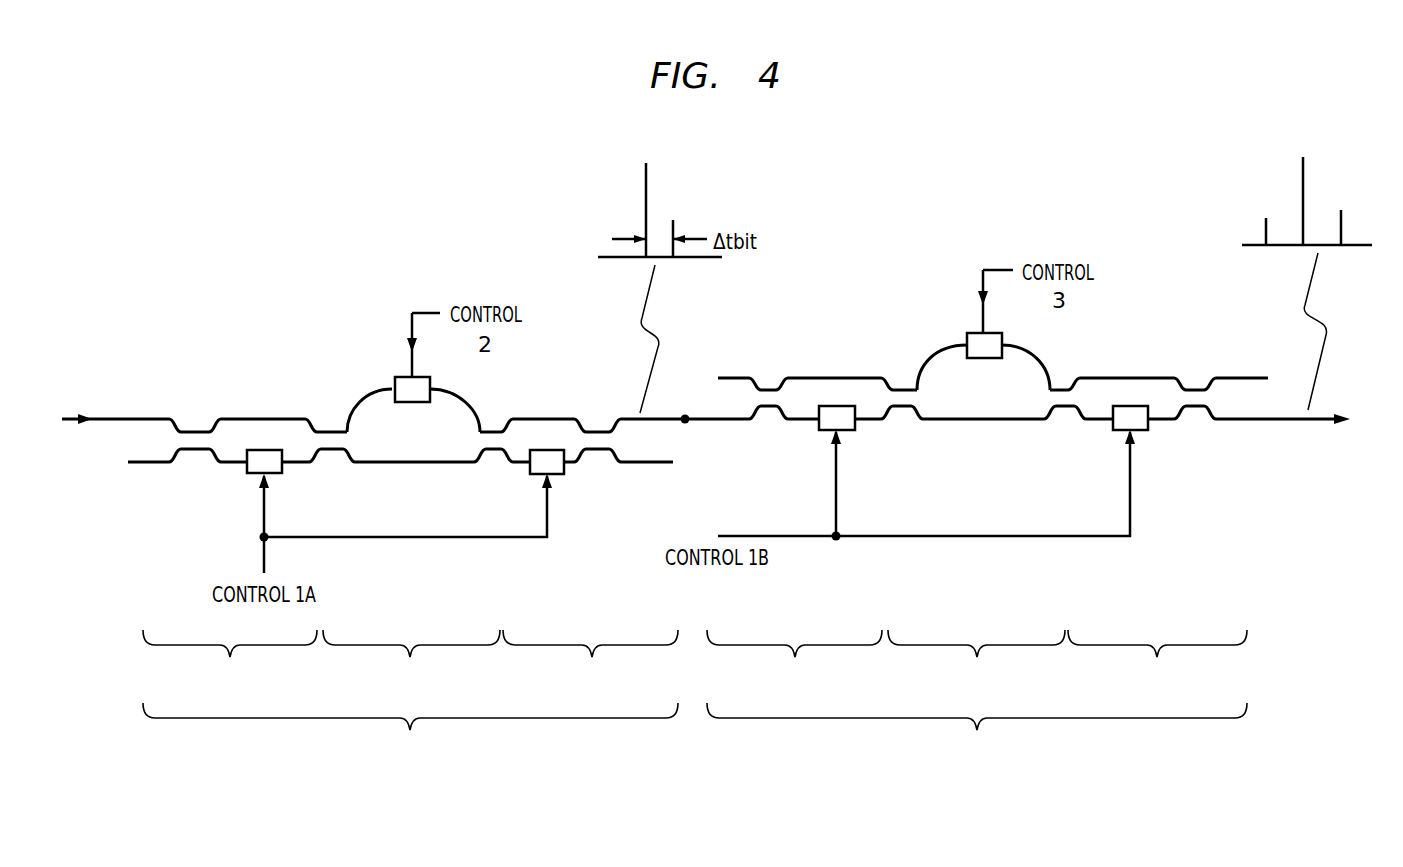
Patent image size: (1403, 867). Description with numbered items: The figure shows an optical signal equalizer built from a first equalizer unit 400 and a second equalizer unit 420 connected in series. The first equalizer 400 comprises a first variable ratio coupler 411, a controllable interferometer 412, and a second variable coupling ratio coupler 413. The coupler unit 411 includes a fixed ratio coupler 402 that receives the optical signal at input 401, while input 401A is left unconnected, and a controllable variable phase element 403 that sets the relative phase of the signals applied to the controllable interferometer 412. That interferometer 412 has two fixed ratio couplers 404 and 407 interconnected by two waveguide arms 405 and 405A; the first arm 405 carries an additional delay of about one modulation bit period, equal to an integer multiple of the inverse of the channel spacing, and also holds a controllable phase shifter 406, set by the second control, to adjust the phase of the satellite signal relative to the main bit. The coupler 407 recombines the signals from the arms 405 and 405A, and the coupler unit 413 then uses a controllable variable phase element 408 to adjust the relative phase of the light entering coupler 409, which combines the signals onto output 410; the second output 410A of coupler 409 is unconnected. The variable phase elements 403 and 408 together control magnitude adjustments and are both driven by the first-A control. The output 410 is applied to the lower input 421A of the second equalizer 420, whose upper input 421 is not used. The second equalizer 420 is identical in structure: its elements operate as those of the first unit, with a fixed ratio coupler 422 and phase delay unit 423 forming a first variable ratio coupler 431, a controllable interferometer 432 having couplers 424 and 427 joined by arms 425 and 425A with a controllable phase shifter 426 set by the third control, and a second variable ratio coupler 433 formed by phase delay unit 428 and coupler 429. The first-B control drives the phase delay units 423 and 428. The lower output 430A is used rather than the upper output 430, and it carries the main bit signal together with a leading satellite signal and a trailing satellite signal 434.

The first equalizer unit 400 is at (410, 732).
The input 401 is at (160, 418).
The input 401A is at (135, 465).
The fixed ratio coupler 402 is at (194, 431).
The controllable variable phase element 403 is at (253, 475).
The fixed ratio coupler 404 is at (329, 431).
The first waveguide arm 405 is at (353, 407).
The second waveguide arm 405A is at (373, 464).
The controllable phase shifter 406 is at (422, 373).
The fixed ratio coupler 407 is at (492, 430).
The controllable variable phase element 408 is at (538, 476).
The coupler 409 is at (598, 431).
The output 410 is at (670, 416).
The second output 410A is at (647, 464).
The first variable ratio coupler 411 is at (230, 660).
The controllable interferometer 412 is at (411, 660).
The second variable coupling ratio coupler 413 is at (590, 660).
The second equalizer unit 420 is at (977, 732).
The upper input 421 is at (732, 377).
The lower input 421A is at (720, 421).
The fixed ratio coupler 422 is at (768, 389).
The controllable phase delay unit 423 is at (848, 433).
The fixed ratio coupler 424 is at (902, 389).
The first waveguide arm 425 is at (927, 364).
The second waveguide arm 425A is at (942, 421).
The controllable phase shifter 426 is at (993, 332).
The fixed ratio coupler 427 is at (1063, 388).
The controllable phase delay unit 428 is at (1141, 432).
The coupler 429 is at (1198, 389).
The upper output 430 is at (1242, 376).
The lower output 430A is at (1277, 422).
The first variable ratio coupler 431 is at (794, 660).
The controllable interferometer 432 is at (976, 660).
The second variable ratio coupler 433 is at (1157, 660).
The trailing compensation or satellite signal 434 is at (1264, 228).